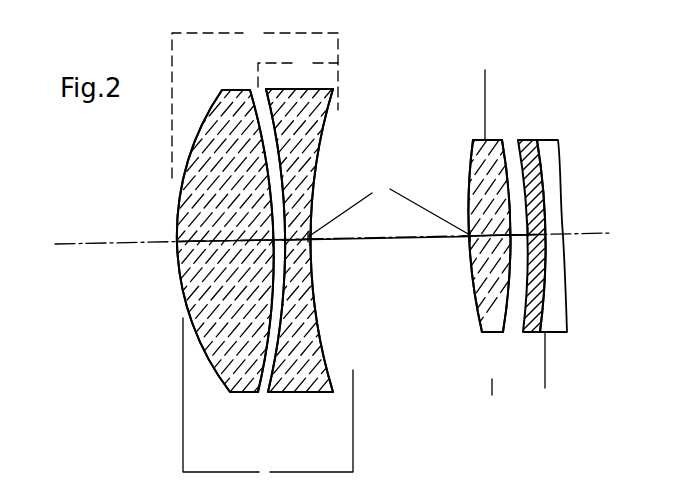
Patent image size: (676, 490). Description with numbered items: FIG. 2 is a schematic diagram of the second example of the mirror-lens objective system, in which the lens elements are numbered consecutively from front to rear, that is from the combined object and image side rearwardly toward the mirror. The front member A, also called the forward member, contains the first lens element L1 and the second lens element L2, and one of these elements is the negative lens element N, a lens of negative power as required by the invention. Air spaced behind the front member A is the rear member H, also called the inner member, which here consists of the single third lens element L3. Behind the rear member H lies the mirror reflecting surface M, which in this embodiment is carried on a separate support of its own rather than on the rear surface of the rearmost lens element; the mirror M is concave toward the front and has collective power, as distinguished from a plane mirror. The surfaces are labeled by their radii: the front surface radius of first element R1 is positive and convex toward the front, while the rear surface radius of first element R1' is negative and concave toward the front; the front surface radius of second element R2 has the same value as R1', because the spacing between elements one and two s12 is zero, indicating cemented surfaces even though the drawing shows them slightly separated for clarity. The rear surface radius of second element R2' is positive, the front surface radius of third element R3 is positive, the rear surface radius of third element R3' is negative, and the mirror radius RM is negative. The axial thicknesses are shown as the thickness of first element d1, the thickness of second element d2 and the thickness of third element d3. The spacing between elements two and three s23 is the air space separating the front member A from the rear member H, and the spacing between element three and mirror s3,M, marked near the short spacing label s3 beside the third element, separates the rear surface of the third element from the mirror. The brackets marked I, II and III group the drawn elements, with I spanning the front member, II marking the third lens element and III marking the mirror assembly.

The first lens element L1 is at (225, 386).
The second lens element L2 is at (308, 378).
The third lens element L3 is at (492, 333).
The mirror reflecting surface M is at (528, 139).
The front surface radius of first element R1 is at (186, 241).
The rear surface radius of first element R1' is at (228, 221).
The front surface radius of second element R2 is at (255, 224).
The rear surface radius of second element R2' is at (344, 240).
The front surface radius of third element R3 is at (462, 220).
The rear surface radius of third element R3' is at (505, 213).
The mirror radius RM is at (538, 156).
The thickness of first element d1 is at (226, 245).
The thickness of second element d2 is at (292, 245).
The thickness of third element d3 is at (489, 242).
The spacing between elements one and two s12 is at (265, 393).
The spacing between elements two and three s23 is at (385, 239).
The air gap between third lens and mirror s3 is at (514, 230).
The spacing between element three and mirror s3,M is at (523, 230).
The front member A is at (255, 99).
The negative lens element N is at (298, 68).
The rear member H is at (480, 89).
The first lens group I is at (268, 476).
The second lens group II is at (499, 415).
The third group (mirror) III is at (554, 408).